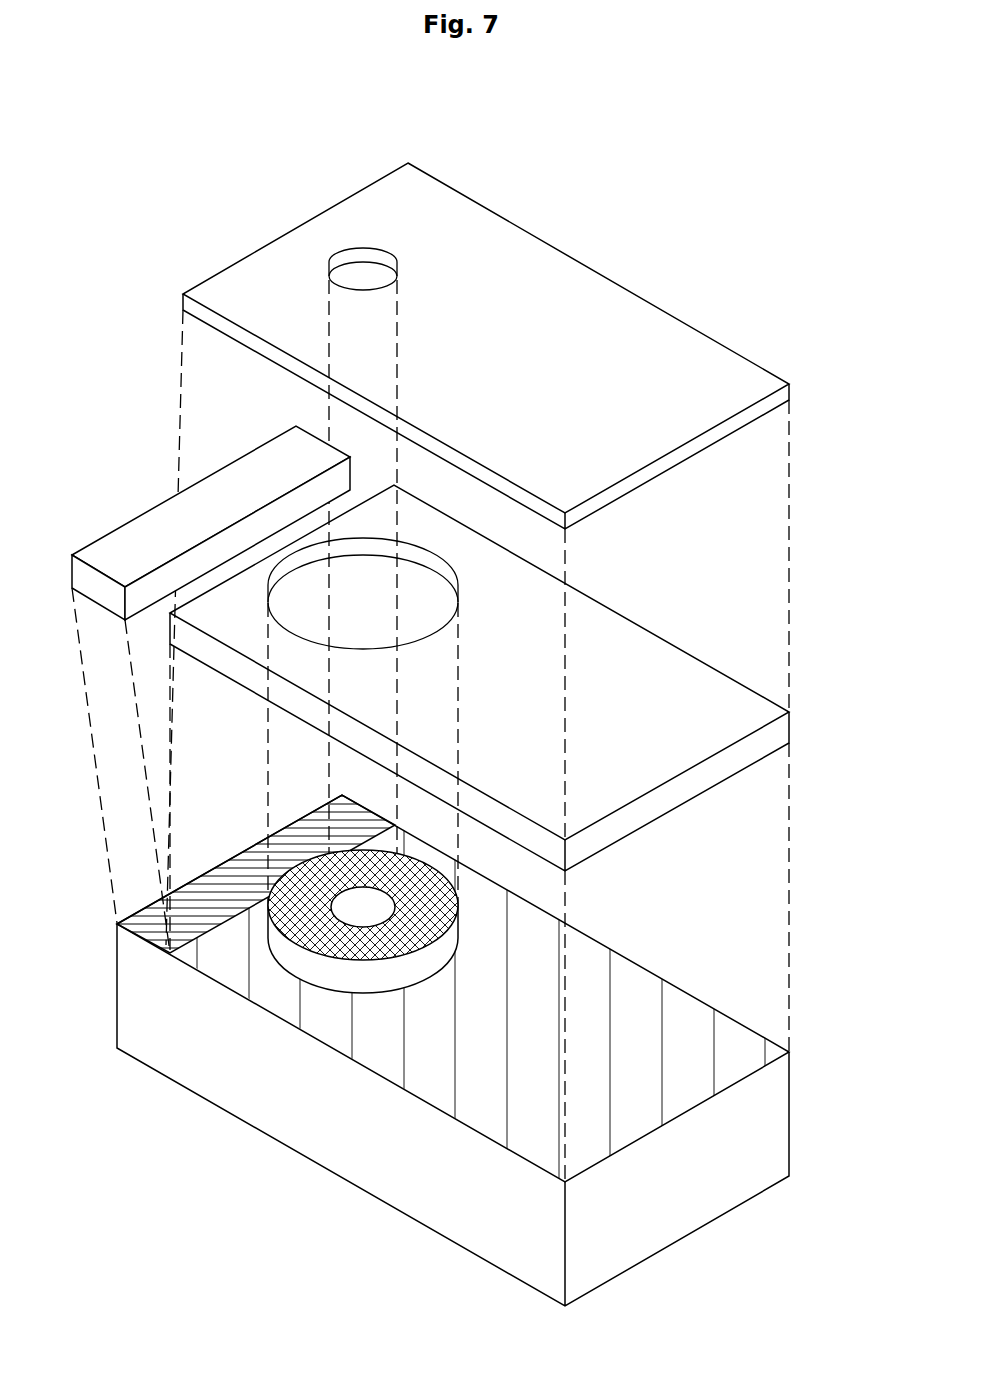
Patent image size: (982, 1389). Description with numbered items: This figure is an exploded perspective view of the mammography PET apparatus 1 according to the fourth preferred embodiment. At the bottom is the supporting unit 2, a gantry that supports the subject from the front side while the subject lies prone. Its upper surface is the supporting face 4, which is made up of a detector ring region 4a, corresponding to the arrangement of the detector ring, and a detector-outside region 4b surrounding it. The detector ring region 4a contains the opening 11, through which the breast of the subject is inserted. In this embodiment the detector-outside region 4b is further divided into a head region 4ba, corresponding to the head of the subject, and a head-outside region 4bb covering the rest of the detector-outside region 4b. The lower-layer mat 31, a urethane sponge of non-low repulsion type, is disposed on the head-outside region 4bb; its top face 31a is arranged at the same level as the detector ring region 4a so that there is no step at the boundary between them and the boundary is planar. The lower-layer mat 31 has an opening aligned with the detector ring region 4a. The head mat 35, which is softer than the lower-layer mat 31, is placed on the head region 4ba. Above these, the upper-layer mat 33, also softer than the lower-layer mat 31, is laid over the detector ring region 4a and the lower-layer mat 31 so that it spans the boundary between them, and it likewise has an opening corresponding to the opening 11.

The mammography PET apparatus 1 is at (132, 167).
The supporting unit 2 is at (690, 1230).
The supporting face 4 is at (441, 988).
The detector ring region 4a is at (349, 960).
The detector-outside region 4b is at (441, 988).
The head region 4ba is at (238, 853).
The head-outside region 4bb is at (624, 972).
The opening 11 is at (376, 917).
The lower-layer mat 31 is at (479, 678).
The top face 31a is at (645, 645).
The upper-layer mat 33 is at (668, 465).
The head mat 35 is at (120, 533).